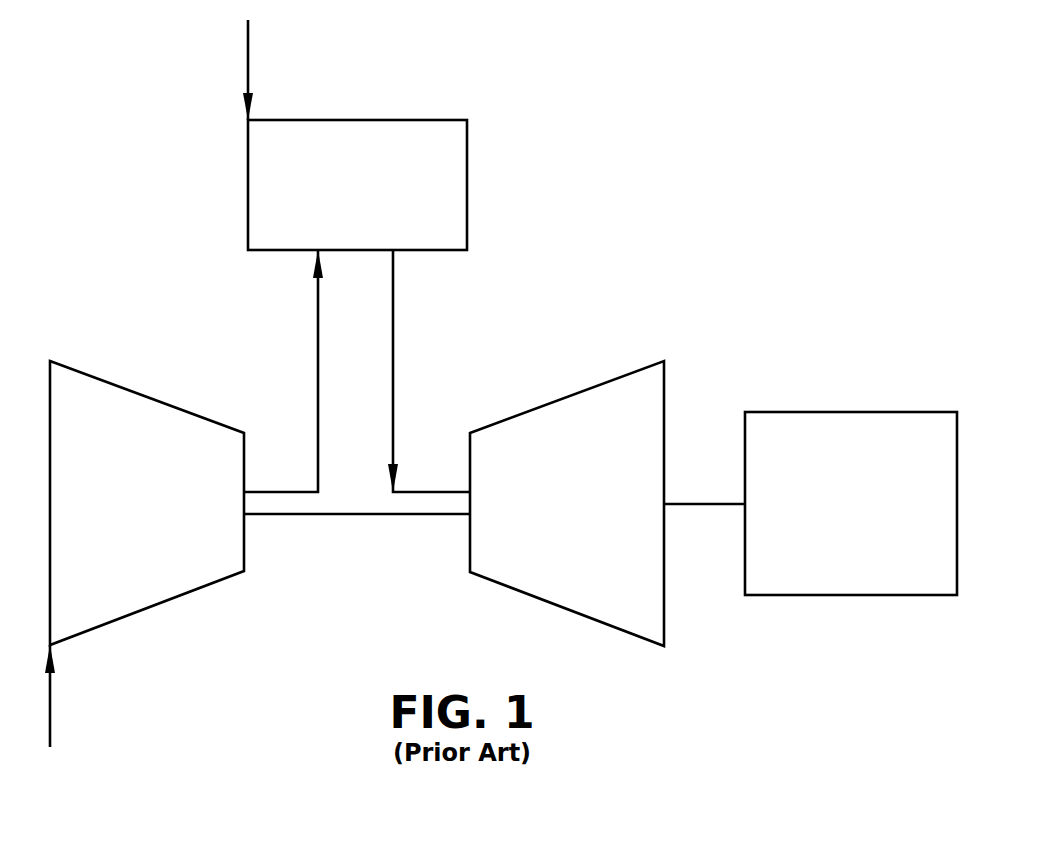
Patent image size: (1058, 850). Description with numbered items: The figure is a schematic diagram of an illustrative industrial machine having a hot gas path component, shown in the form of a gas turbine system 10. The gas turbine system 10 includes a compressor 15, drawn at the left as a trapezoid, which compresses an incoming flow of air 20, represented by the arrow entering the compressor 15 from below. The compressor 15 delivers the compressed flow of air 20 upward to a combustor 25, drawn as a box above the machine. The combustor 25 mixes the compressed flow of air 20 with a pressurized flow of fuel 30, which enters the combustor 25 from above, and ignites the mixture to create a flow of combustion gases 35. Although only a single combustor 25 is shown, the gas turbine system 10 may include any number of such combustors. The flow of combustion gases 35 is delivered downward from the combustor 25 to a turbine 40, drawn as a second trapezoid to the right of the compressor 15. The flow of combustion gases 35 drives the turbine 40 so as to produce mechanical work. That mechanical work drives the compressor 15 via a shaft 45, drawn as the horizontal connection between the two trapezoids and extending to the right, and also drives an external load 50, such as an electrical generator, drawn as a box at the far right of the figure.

The gas turbine system 10 is at (172, 263).
The compressor 15 is at (147, 503).
The flow of air 20 is at (50, 712).
The combustor 25 is at (357, 185).
The flow of fuel 30 is at (248, 64).
The flow of combustion gases 35 is at (393, 424).
The turbine 40 is at (567, 503).
The shaft 45 is at (702, 504).
The external load 50 is at (851, 503).